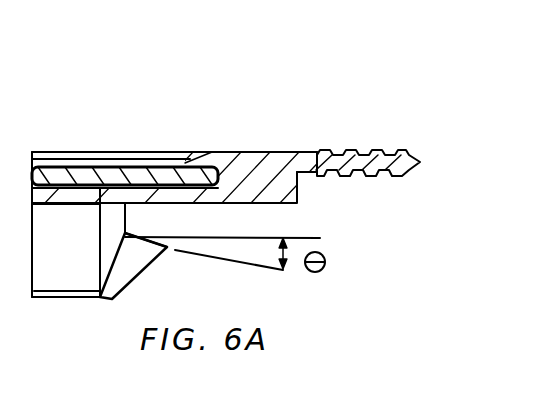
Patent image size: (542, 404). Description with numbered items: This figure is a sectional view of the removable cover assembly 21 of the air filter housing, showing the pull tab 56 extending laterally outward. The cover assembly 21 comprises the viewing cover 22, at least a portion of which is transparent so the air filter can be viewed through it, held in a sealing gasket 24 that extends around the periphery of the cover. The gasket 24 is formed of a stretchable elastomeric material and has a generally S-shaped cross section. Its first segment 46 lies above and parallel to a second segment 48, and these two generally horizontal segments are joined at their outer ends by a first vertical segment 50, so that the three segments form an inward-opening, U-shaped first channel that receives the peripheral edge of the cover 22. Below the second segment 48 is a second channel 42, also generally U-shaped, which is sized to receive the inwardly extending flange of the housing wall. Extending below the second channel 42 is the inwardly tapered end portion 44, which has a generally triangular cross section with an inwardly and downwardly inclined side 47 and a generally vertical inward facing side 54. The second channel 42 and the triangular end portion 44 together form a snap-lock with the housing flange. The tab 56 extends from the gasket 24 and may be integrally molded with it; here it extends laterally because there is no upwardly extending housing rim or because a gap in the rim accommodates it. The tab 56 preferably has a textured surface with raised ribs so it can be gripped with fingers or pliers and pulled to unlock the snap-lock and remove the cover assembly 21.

The removable cover assembly 21 is at (403, 251).
The viewing cover 22 is at (88, 178).
The sealing gasket 24 is at (343, 142).
The second channel 42 is at (133, 224).
The end portion 44 is at (122, 278).
The first segment 46 is at (211, 159).
The inwardly and downwardly inclined side 47 is at (112, 260).
The second segment 48 is at (147, 196).
The first vertical segment 50 is at (297, 188).
The generally vertical inward facing side 54 is at (63, 230).
The tab 56 is at (420, 163).